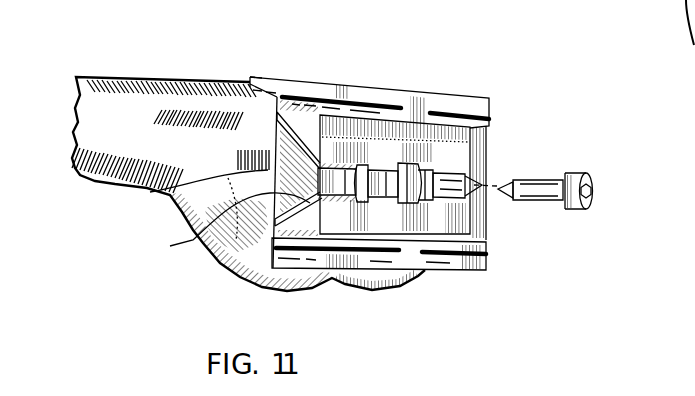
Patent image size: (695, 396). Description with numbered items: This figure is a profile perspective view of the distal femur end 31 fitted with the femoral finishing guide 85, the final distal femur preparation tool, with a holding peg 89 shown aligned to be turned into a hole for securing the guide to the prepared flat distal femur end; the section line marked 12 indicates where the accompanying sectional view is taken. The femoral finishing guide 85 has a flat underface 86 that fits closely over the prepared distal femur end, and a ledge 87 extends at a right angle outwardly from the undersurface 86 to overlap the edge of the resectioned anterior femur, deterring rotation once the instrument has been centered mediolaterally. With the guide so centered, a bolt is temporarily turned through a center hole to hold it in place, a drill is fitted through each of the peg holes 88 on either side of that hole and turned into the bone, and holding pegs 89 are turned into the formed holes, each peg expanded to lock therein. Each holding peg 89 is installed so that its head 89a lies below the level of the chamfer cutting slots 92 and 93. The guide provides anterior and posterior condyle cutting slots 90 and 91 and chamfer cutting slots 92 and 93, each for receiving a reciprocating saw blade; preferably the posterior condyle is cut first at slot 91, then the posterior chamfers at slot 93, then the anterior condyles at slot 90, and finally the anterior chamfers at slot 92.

The bone (distal femur) 31 is at (112, 184).
The femoral finishing guide 85 is at (386, 76).
The flat underface 86 is at (270, 147).
The ledge 87 is at (250, 78).
The peg holes 88 is at (437, 166).
The holding peg 89 is at (548, 182).
The head 89a is at (593, 184).
The anterior condyle cutting slot 90 is at (312, 106).
The posterior condyle cutting slot 91 is at (490, 257).
The anterior chamfer cutting slot 92 is at (318, 102).
The posterior chamfer cutting slot 93 is at (193, 240).
The section line 12- 12 is at (408, 43).